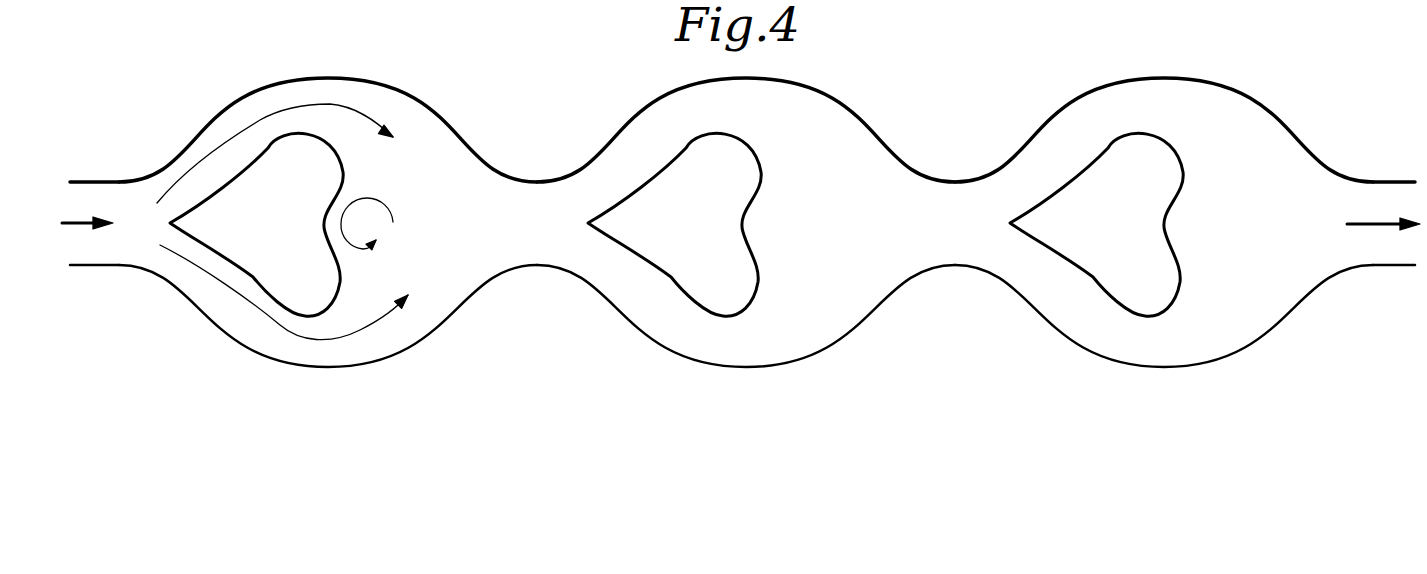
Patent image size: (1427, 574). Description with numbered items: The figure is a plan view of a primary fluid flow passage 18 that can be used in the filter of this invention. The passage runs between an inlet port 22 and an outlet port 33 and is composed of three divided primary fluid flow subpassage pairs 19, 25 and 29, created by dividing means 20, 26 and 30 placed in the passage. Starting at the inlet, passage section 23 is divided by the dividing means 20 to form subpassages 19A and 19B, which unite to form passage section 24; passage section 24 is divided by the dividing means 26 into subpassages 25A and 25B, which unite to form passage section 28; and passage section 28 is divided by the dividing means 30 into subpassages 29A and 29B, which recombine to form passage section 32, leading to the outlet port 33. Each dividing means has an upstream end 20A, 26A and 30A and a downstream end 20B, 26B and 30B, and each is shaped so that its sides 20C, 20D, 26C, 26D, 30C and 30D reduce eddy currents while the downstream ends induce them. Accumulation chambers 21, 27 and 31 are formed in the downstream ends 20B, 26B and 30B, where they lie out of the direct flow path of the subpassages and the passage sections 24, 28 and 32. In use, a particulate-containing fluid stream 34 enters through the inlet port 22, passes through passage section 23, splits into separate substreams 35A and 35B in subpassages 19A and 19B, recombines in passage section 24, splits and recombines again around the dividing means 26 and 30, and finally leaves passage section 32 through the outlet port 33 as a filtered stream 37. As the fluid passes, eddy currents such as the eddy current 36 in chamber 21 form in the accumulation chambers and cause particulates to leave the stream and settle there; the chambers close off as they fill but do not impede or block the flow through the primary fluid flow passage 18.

The primary fluid flow passage 18 is at (223, 83).
The primary fluid flow subpassage pair 19 is at (293, 90).
The subpassage 19A is at (383, 82).
The subpassage 19B is at (388, 350).
The dividing means 20 is at (253, 280).
The upstream end 20A is at (192, 240).
The downstream end 20B is at (350, 275).
The side 20C is at (272, 310).
The side 20D is at (263, 153).
The accumulation chamber 21 is at (345, 195).
The inlet port 22 is at (100, 182).
The passage section 23 is at (120, 187).
The passage section 24 is at (540, 268).
The primary fluid flow subpassage pair 25 is at (702, 92).
The subpassage 25A is at (780, 80).
The subpassage 25B is at (782, 367).
The dividing means 26 is at (680, 285).
The upstream end 26A is at (620, 248).
The downstream end 26B is at (773, 288).
The side 26C is at (713, 320).
The side 26D is at (660, 185).
The accumulation chamber 27 is at (765, 200).
The passage section 28 is at (958, 268).
The primary fluid flow subpassage pair 29 is at (1132, 83).
The subpassage 29A is at (1195, 75).
The subpassage 29B is at (1207, 367).
The dividing means 30 is at (1110, 295).
The upstream end 30A is at (1042, 245).
The downstream end 30B is at (1193, 285).
The side 30C is at (1150, 320).
The side 30D is at (1095, 170).
The accumulation chamber 31 is at (1180, 202).
The passage section 32 is at (1355, 183).
The outlet port 33 is at (1395, 180).
The particulate-containing fluid stream 34 is at (78, 228).
The substream 35A is at (323, 105).
The substream 35B is at (308, 340).
The eddy current 36 is at (350, 317).
The filtered stream 37 is at (1380, 224).